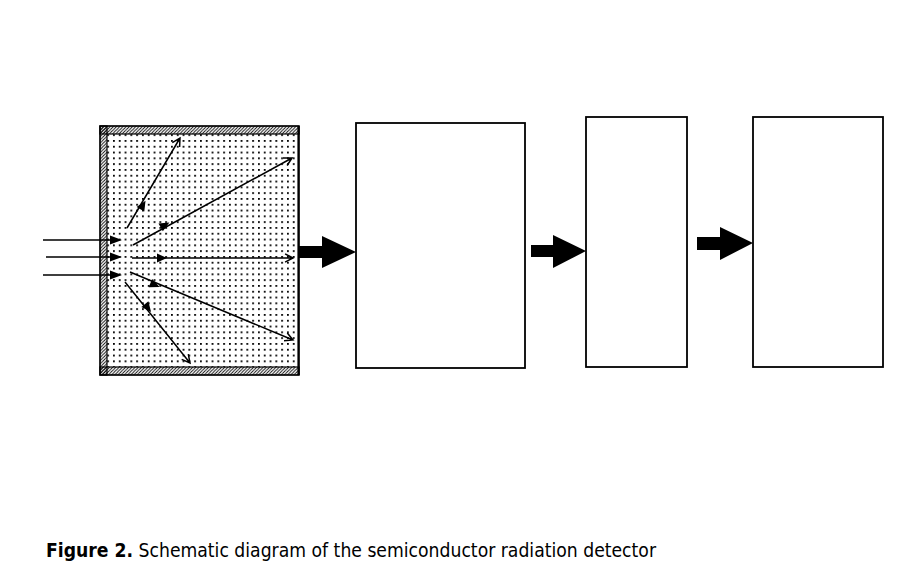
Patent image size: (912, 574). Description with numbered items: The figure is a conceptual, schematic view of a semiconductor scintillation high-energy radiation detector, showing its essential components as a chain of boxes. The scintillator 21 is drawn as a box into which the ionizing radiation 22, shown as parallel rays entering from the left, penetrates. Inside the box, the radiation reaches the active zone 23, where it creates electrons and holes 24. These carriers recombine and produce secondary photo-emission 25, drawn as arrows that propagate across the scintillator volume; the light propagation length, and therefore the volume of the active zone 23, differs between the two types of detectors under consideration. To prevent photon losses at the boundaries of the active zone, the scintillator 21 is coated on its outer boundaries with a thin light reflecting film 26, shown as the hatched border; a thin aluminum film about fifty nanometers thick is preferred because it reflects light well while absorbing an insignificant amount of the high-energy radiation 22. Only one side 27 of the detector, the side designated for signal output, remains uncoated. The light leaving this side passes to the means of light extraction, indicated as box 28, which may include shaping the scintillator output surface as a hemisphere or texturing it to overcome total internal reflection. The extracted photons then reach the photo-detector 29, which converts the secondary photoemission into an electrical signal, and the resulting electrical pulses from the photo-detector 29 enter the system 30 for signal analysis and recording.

The scintillator 21 is at (189, 107).
The ionizing radiation 22 is at (65, 232).
The active zone 23 is at (217, 163).
The electrons and holes 24 is at (139, 282).
The secondary photo-emission 25 is at (233, 318).
The light reflecting film 26 is at (100, 322).
The uncoated side 27 is at (300, 196).
The means of light extraction 28 is at (440, 322).
The photo-detector 29 is at (635, 340).
The system for signal analysis and recording 30 is at (817, 332).